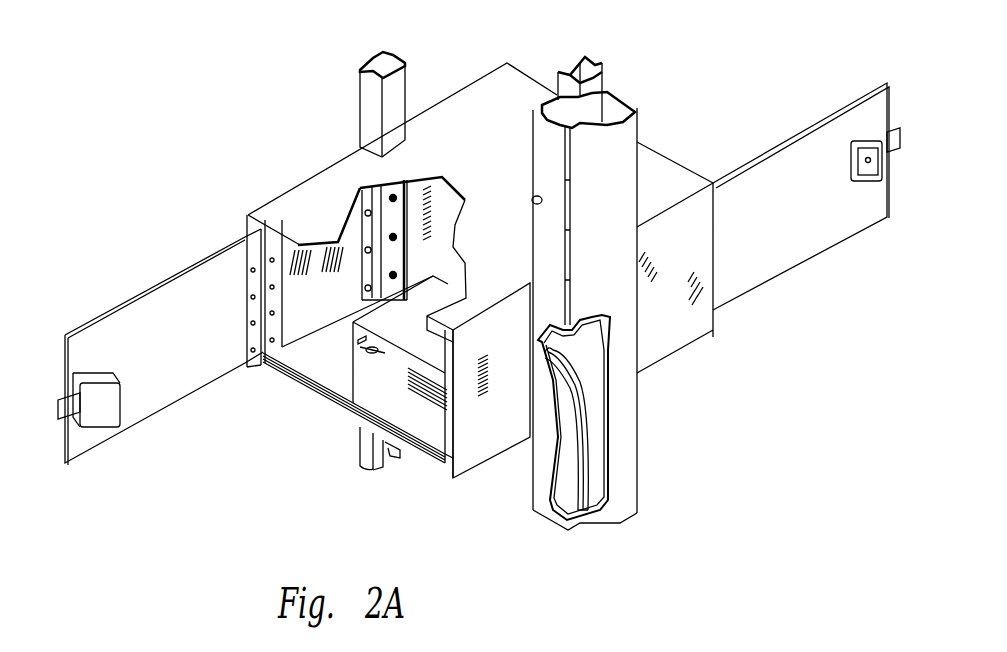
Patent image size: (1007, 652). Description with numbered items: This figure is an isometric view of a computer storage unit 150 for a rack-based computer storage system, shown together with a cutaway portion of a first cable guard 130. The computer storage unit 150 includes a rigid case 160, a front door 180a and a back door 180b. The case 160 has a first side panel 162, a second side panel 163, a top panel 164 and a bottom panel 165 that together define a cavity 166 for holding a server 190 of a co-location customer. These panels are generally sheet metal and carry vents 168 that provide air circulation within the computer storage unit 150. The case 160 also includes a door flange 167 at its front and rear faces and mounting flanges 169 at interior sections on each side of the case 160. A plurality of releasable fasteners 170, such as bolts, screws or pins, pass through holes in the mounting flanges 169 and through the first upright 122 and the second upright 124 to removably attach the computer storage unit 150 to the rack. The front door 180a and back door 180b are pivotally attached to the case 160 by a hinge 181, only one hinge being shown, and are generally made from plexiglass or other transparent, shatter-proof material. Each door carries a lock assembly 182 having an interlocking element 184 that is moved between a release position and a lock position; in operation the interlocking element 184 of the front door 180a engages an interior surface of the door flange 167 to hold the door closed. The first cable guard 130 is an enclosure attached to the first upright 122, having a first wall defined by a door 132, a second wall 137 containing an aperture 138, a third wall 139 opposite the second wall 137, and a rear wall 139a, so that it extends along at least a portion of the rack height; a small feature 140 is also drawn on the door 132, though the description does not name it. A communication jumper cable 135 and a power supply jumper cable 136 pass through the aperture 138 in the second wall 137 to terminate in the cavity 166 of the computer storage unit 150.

The first upright 122 is at (602, 79).
The second upright 124 is at (365, 68).
The first cable guard 130 is at (615, 237).
The door 132 is at (553, 165).
The communication jumper cable 135 is at (577, 396).
The power supply jumper cable 136 is at (593, 427).
The second wall 137 is at (587, 353).
The aperture 138 is at (592, 325).
The third wall 139 is at (628, 457).
The rear wall 139a is at (613, 110).
The hole 140 is at (527, 195).
The computer storage unit 150 is at (343, 440).
The case 160 is at (455, 480).
The first side panel 162 is at (500, 303).
The second side panel 163 is at (302, 238).
The top panel 164 is at (327, 197).
The bottom panel 165 is at (365, 447).
The cavity 166 is at (310, 343).
The door flange 167 is at (447, 433).
The vents 168 is at (482, 433).
The mounting flanges 169 is at (412, 268).
The releasable fasteners 170 is at (364, 289).
The front door 180a is at (150, 310).
The back door 180b is at (792, 242).
The hinge 181 is at (245, 235).
The lock assembly 182 is at (97, 415).
The interlocking element 184 is at (60, 422).
The server 190 is at (350, 403).